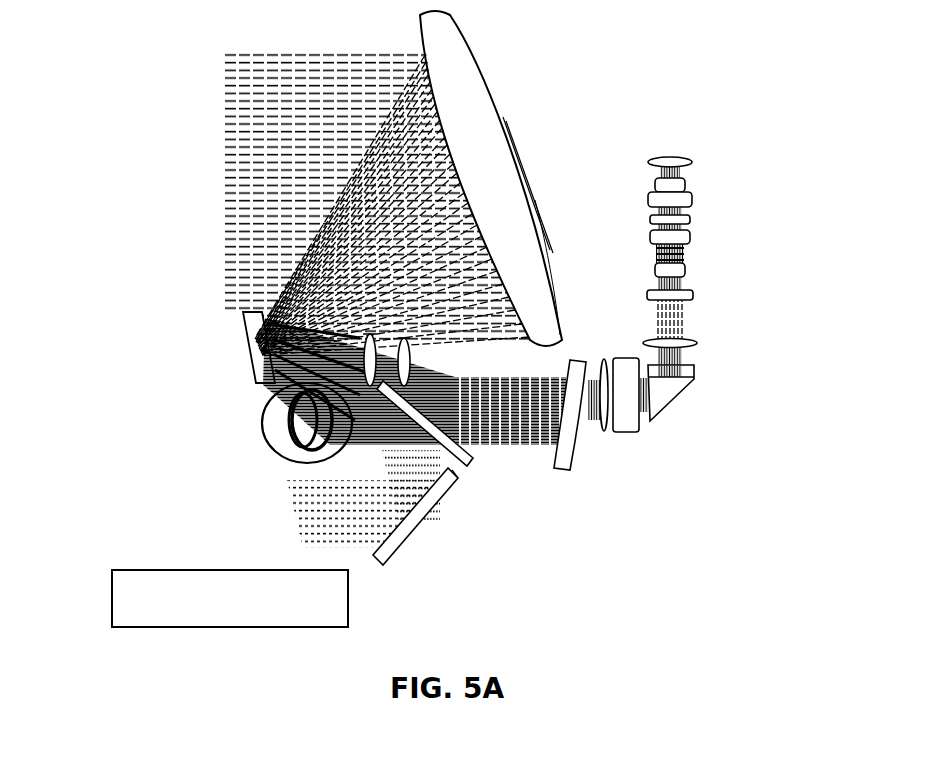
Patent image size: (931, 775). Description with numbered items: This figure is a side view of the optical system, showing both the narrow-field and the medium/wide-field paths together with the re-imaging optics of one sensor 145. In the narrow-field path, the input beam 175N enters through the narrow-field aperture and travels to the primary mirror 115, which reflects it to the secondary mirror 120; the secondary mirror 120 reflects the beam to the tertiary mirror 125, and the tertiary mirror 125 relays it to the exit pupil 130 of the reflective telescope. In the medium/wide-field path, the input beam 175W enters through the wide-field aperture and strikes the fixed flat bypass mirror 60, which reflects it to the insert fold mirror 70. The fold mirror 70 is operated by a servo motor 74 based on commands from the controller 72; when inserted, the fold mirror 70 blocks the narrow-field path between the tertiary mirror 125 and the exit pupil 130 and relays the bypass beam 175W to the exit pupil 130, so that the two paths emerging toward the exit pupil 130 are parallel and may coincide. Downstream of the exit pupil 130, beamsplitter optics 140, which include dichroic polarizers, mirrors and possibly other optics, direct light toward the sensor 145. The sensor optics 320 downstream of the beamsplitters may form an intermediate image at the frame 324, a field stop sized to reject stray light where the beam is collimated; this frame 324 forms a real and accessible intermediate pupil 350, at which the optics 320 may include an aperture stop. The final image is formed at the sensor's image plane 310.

The bypass mirror 60 is at (412, 537).
The insert fold mirror 70 is at (453, 450).
The controller 72 is at (112, 587).
The servo motor 74 is at (403, 348).
The primary mirror 115 is at (485, 73).
The secondary mirror 120 is at (243, 348).
The tertiary mirror 125 is at (560, 470).
The exit pupil 130 is at (268, 420).
The beamsplitter optics 140 is at (672, 433).
The sensor 145 is at (696, 125).
The input beam 175N is at (195, 55).
The input beam 175W is at (280, 480).
The image plane 310 is at (692, 163).
The sensor optics 320 is at (678, 267).
The frame 324 is at (693, 346).
The intermediate pupil 350 is at (650, 238).